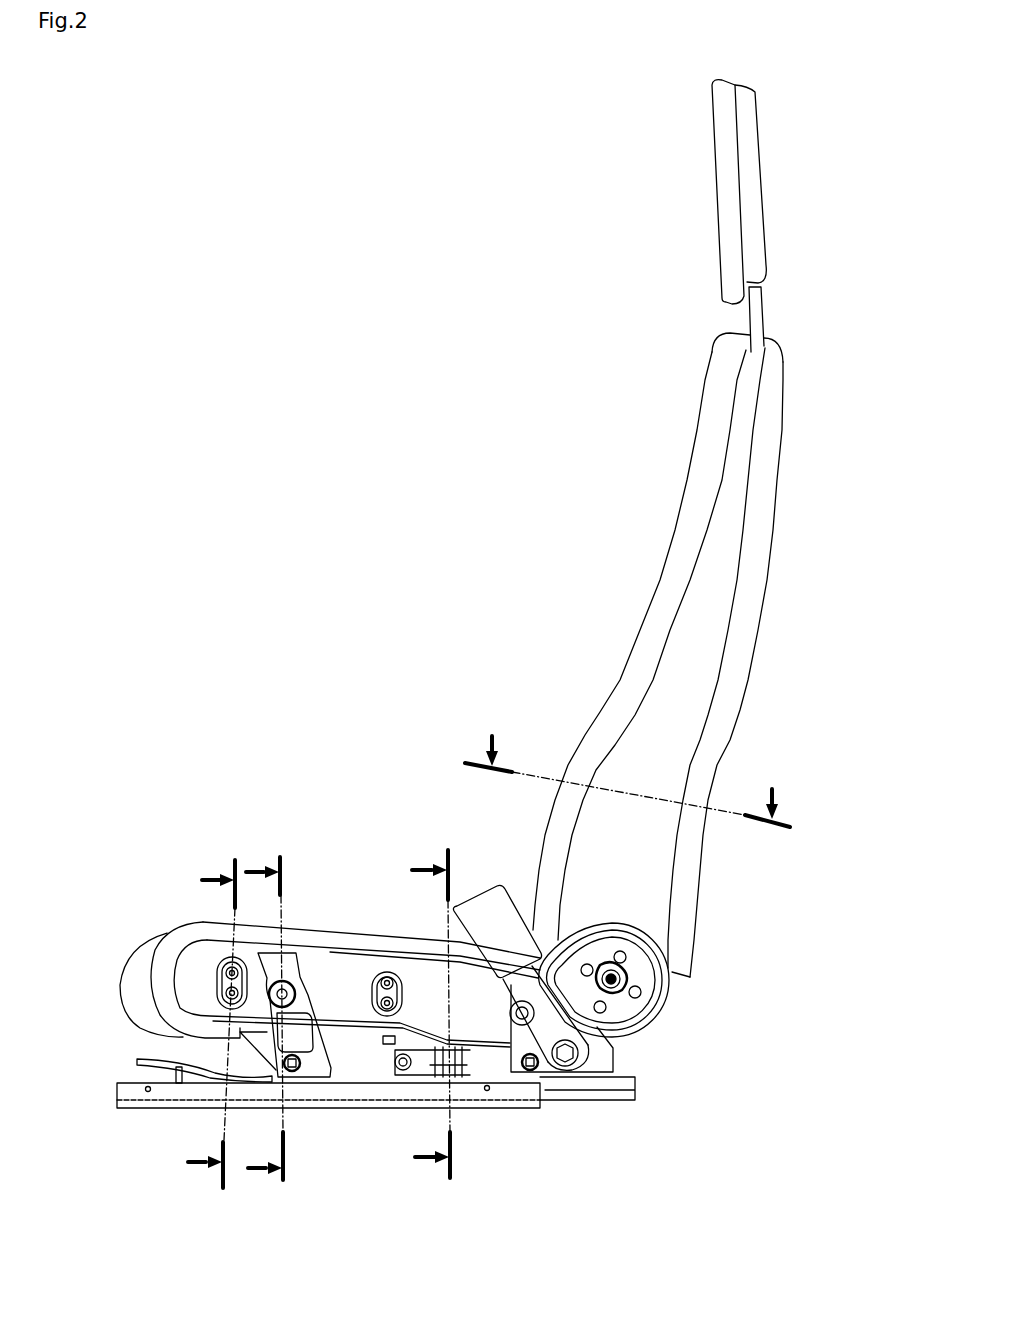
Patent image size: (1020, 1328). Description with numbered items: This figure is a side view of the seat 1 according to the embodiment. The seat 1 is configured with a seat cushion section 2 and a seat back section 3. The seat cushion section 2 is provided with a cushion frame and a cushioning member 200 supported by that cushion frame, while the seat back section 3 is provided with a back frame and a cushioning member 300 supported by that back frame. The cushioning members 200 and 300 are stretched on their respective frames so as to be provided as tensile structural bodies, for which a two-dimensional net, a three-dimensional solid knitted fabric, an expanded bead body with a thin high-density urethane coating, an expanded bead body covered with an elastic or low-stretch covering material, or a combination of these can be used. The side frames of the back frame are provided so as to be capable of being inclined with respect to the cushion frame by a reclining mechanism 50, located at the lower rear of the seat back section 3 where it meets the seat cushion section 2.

The seat 1 is at (655, 437).
The seat cushion section 2 is at (163, 932).
The seat back section 3 is at (670, 536).
The cushioning member 200 is at (342, 928).
The cushioning member 300 is at (684, 484).
The reclining mechanism 50 is at (628, 978).